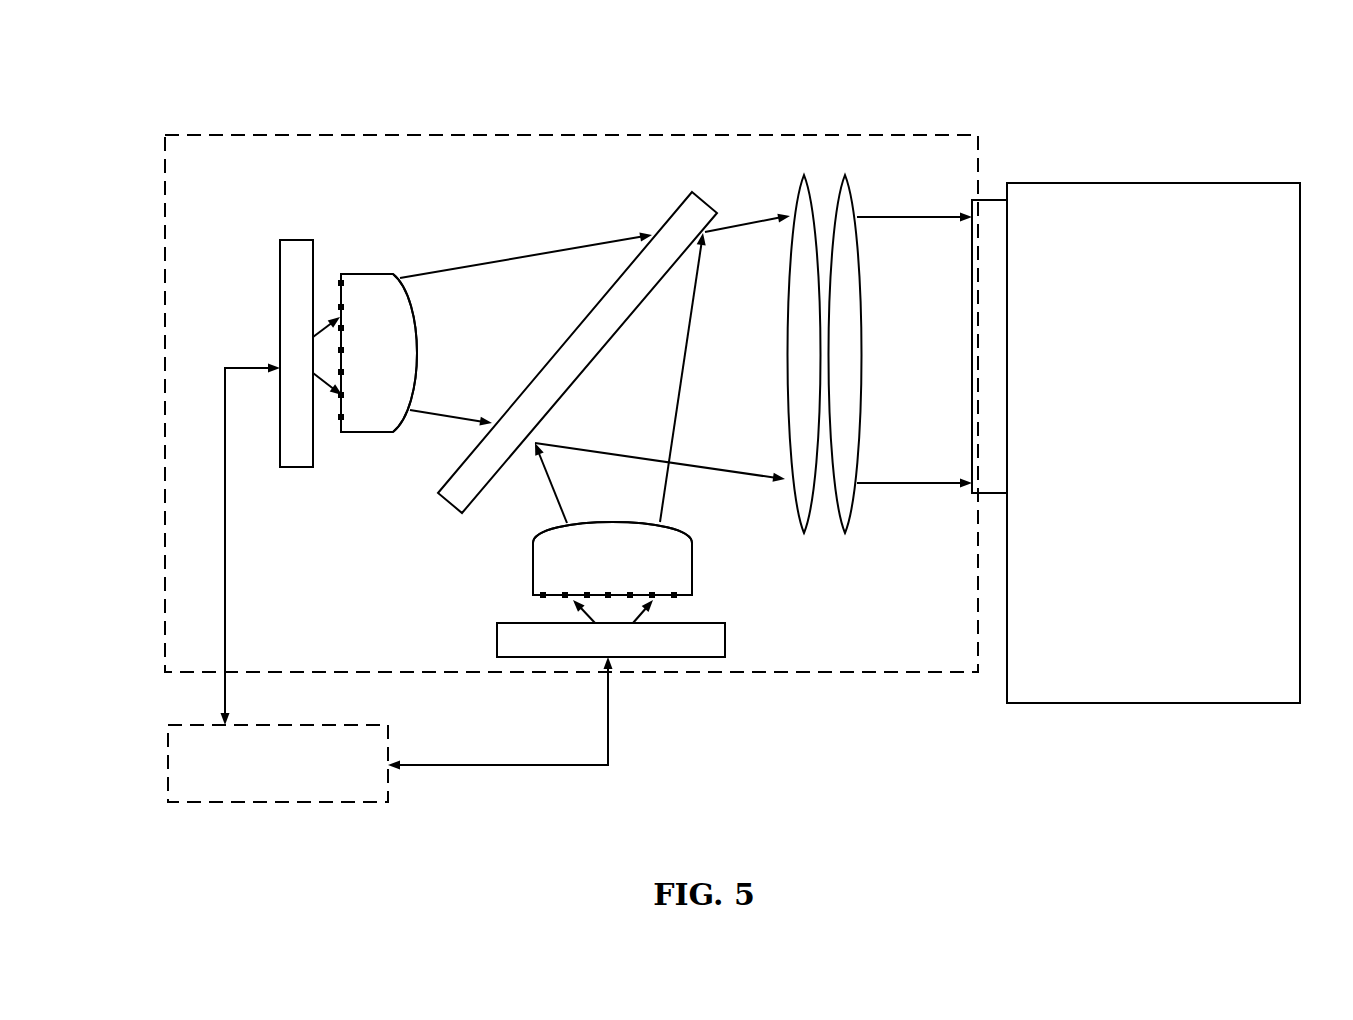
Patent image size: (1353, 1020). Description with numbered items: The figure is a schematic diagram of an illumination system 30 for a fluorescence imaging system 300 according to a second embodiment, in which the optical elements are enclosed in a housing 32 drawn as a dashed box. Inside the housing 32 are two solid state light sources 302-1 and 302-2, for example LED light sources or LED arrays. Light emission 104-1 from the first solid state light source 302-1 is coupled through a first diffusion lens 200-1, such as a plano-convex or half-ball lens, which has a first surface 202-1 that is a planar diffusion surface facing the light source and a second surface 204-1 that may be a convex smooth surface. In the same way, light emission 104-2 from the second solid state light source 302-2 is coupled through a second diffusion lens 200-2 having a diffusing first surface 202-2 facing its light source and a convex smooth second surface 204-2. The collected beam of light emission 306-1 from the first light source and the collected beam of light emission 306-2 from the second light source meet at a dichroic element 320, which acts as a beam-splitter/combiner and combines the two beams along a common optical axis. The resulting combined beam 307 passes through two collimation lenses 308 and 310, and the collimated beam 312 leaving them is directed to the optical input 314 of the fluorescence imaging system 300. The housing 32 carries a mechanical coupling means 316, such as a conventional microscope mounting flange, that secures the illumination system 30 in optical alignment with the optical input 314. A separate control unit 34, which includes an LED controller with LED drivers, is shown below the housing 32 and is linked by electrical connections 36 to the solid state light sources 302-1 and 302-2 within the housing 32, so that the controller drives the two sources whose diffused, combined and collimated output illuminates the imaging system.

The illumination system 30 is at (372, 82).
The housing 32 is at (247, 135).
The control unit 34 is at (278, 763).
The electrical connections 36 is at (225, 672).
The light emission 104-1 is at (322, 363).
The light emission 104-2 is at (615, 611).
The first diffusion lens 200-1 is at (379, 353).
The second diffusion lens 200-2 is at (612, 558).
The first surface 202-1 is at (342, 435).
The first surface 202-2 is at (533, 596).
The second surface 204-1 is at (418, 338).
The second surface 204-2 is at (555, 528).
The fluorescence imaging system 300 is at (1153, 443).
The first solid state light source 302-1 is at (297, 290).
The second solid state light source 302-2 is at (611, 640).
The collected beam of light emission 306-1 is at (507, 293).
The collected beam of light emission 306-2 is at (625, 478).
The combined beam 307 is at (713, 305).
The collimation lens 308 is at (797, 535).
The collimation lens 310 is at (843, 535).
The collimated beam 312 is at (920, 237).
The optical input 314 is at (1003, 480).
The mechanical coupling means 316 is at (1000, 237).
The dichroic element 320 is at (680, 225).